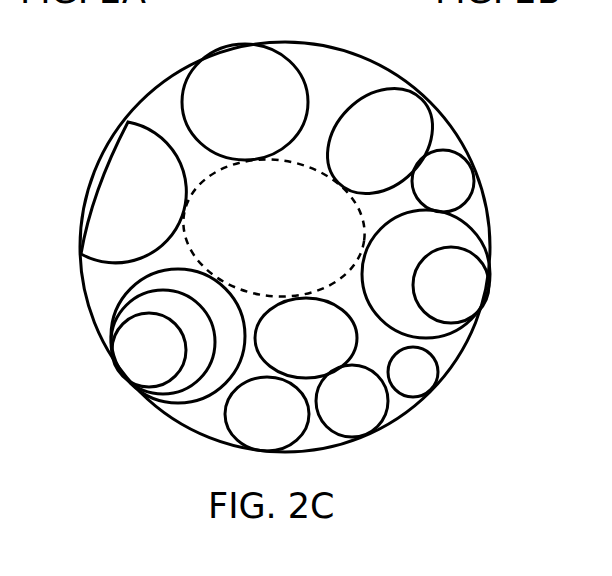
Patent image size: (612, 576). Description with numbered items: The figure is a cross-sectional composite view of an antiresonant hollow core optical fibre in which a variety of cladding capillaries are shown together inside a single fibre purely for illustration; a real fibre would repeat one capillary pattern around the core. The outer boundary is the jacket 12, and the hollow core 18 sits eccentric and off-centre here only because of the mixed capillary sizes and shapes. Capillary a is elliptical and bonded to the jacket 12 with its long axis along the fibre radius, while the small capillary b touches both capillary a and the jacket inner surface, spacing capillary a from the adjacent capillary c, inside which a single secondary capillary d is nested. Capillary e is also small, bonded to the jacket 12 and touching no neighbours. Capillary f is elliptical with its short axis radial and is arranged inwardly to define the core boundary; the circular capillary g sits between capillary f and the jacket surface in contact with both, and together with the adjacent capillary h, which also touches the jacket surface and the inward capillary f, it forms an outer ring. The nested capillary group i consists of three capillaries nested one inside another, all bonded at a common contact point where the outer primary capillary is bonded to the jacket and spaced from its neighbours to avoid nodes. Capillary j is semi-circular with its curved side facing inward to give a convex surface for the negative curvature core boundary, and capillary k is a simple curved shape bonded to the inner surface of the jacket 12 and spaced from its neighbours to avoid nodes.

The jacket 12 is at (160, 85).
The core 18 is at (233, 223).
The capillary a is at (402, 127).
The capillary b is at (447, 178).
The capillary c is at (438, 238).
The secondary capillary d is at (463, 290).
The capillary e is at (443, 368).
The capillary f is at (293, 300).
The capillary g is at (388, 413).
The capillary h is at (222, 420).
The nested capillary group i is at (118, 370).
The capillary j is at (102, 188).
The capillary k is at (273, 48).